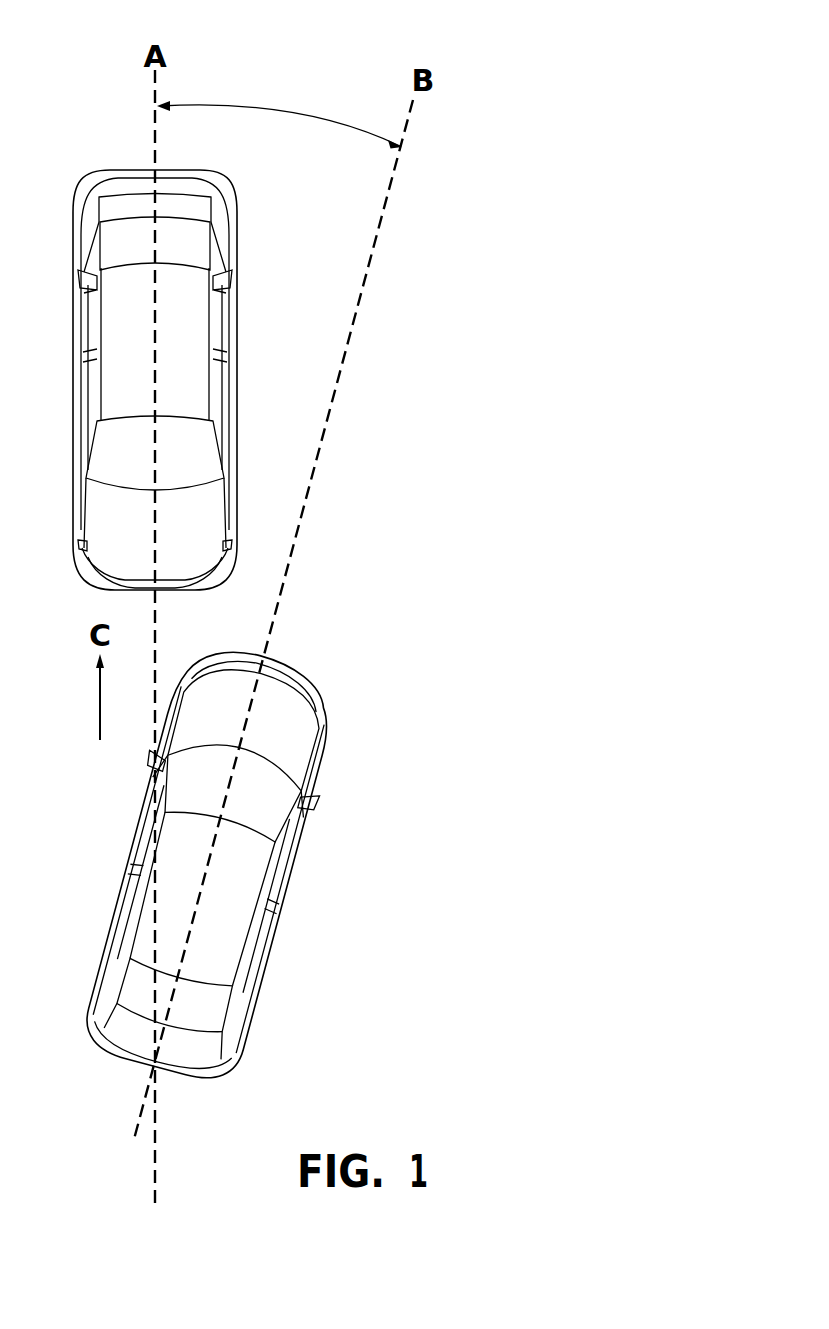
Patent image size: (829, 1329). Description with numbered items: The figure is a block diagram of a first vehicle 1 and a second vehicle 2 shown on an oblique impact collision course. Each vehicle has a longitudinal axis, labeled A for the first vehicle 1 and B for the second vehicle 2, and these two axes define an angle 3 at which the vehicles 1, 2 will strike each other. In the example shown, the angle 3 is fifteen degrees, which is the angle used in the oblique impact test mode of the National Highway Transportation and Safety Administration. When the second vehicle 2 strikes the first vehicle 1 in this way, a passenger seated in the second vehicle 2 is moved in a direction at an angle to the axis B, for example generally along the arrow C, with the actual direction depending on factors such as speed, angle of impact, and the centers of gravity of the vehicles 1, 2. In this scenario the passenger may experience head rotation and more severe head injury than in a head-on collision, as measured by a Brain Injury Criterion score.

The first vehicle 1 is at (117, 323).
The second vehicle 2 is at (216, 927).
The angle 3 is at (285, 85).